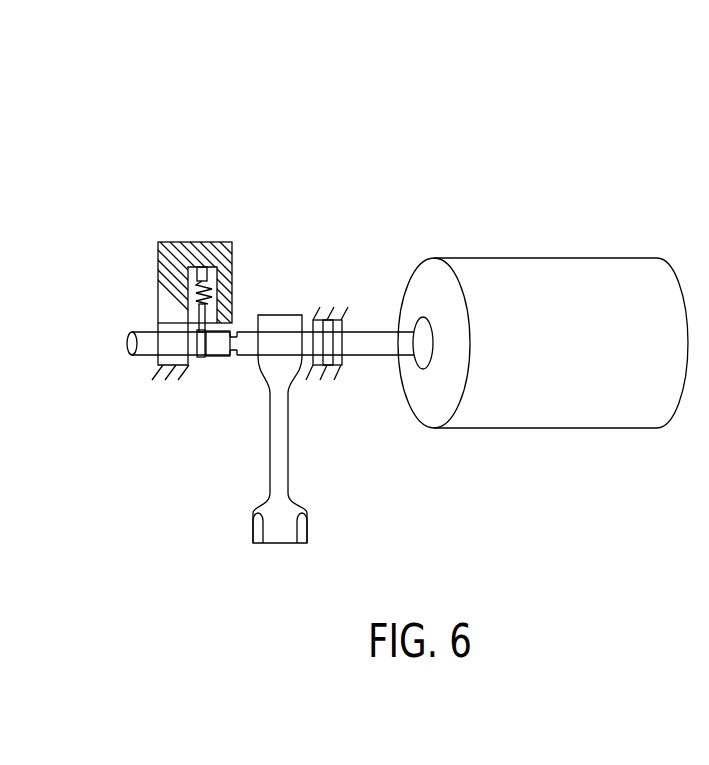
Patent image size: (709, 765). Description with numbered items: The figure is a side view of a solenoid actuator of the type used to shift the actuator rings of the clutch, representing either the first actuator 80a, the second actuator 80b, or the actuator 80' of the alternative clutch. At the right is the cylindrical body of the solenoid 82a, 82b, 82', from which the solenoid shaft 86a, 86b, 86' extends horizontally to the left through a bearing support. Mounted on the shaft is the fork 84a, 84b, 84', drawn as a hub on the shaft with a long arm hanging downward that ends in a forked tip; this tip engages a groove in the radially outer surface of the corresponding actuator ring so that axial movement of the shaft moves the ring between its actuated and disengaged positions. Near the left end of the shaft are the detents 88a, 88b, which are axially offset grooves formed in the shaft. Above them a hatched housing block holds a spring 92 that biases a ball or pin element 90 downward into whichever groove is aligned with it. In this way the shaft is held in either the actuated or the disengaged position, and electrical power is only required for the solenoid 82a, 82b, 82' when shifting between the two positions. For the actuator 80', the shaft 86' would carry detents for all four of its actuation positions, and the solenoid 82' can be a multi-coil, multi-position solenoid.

The first actuator 80a is at (384, 216).
The second actuator 80b is at (384, 216).
The actuator 80' is at (384, 216).
The first solenoid 82a is at (552, 297).
The second solenoid 82b is at (552, 297).
The solenoid 82' is at (552, 297).
The fork 84' is at (202, 429).
The first fork 84a is at (202, 429).
The second fork 84b is at (275, 443).
The first solenoid shaft 86a is at (382, 284).
The second solenoid shaft 86b is at (382, 284).
The solenoid shaft 86' is at (382, 284).
The detent 88a is at (199, 358).
The detent 88b is at (230, 357).
The ball or pin element 90 is at (208, 312).
The spring 92 is at (198, 268).